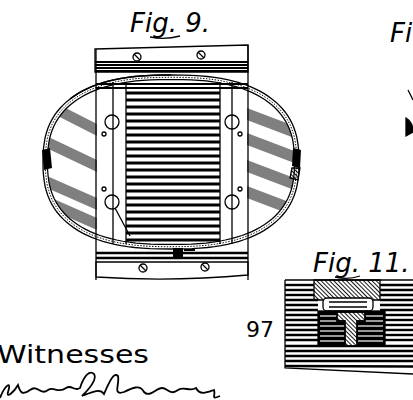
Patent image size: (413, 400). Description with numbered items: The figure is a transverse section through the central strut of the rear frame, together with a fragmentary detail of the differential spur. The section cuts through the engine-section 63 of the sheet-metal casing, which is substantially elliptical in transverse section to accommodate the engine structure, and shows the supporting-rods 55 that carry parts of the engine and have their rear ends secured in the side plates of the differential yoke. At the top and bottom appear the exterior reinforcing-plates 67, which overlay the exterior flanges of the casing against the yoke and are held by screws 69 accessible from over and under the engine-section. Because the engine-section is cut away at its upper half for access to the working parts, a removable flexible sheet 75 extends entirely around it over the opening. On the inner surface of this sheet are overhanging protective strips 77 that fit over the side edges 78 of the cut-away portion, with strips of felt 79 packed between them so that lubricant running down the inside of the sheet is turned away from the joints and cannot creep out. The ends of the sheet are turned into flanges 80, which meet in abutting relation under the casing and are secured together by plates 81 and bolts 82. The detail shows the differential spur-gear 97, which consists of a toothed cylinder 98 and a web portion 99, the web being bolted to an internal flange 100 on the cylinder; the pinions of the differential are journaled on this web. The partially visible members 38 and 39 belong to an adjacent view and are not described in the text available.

In FIG. 9, the supporting-rods 55 is at (104, 120).
In FIG. 9, the engine-section 63 is at (274, 103).
In FIG. 9, the reinforcing-plates 67 is at (224, 54).
In FIG. 9, the screws 69 is at (134, 55).
In FIG. 9, the flexible sheet 75 is at (90, 98).
In FIG. 9, the protective strips 77 is at (42, 158).
In FIG. 9, the side edges 78 is at (300, 172).
In FIG. 9, the strips of felt 79 is at (301, 161).
In FIG. 9, the flanges 80 is at (174, 256).
In FIG. 9, the plates 81 is at (178, 256).
In FIG. 9, the bolts 82 is at (186, 256).
In FIG. 9, the spur-gear 97 is at (104, 231).
In FIG. 11, the toothed cylinder 98 is at (373, 355).
In FIG. 11, the web portion 99 is at (343, 350).
In FIG. 11, the internal flange 100 is at (323, 298).
In FIG. 10, the member 38 is at (406, 127).
In FIG. 10, the member 39 is at (412, 94).